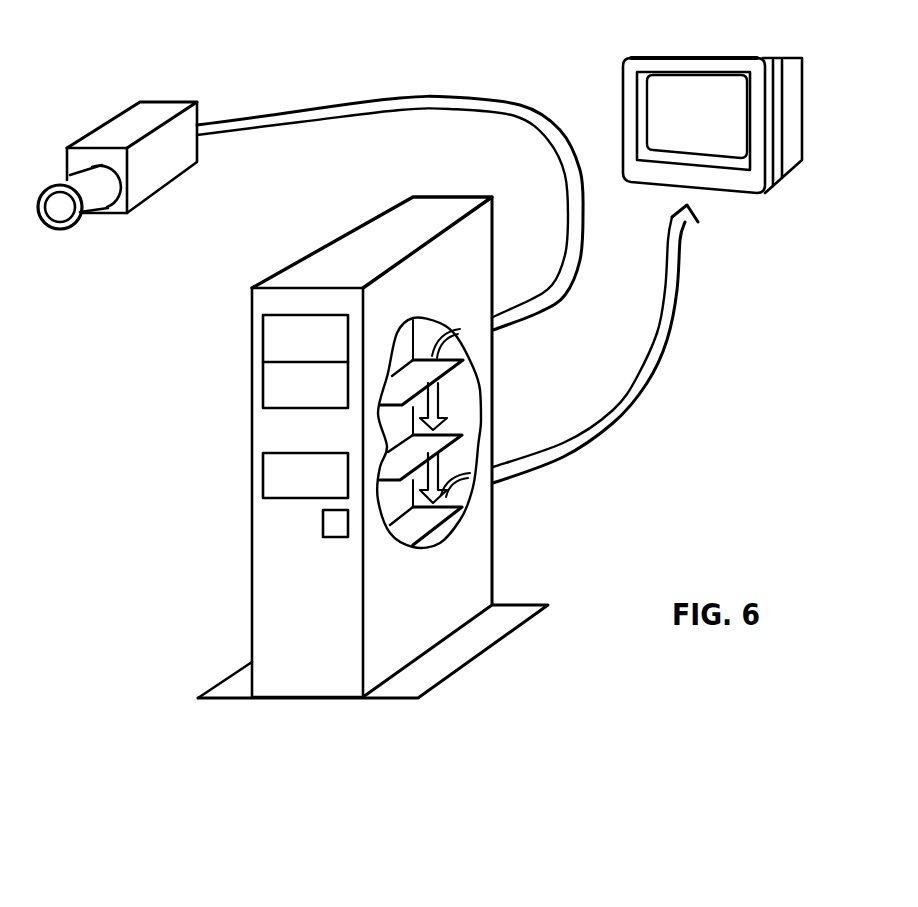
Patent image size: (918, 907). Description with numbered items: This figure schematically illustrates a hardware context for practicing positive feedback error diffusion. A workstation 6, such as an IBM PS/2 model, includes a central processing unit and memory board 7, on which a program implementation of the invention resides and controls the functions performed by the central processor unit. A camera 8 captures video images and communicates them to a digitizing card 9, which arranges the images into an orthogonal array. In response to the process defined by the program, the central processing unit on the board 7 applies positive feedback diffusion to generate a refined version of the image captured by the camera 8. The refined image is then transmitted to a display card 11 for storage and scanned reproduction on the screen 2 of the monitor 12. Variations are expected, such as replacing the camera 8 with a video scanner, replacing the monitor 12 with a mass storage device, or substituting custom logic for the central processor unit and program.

The screen 2 is at (678, 86).
The workstation 6 is at (252, 584).
The central processing unit and memory board 7 is at (450, 437).
The camera 8 is at (137, 115).
The digitizing card 9 is at (405, 378).
The display card 11 is at (423, 522).
The monitor 12 is at (788, 116).